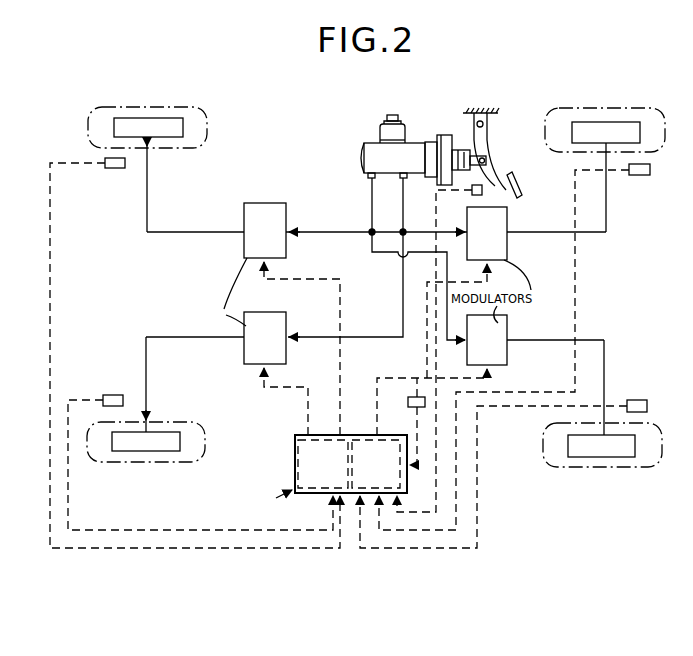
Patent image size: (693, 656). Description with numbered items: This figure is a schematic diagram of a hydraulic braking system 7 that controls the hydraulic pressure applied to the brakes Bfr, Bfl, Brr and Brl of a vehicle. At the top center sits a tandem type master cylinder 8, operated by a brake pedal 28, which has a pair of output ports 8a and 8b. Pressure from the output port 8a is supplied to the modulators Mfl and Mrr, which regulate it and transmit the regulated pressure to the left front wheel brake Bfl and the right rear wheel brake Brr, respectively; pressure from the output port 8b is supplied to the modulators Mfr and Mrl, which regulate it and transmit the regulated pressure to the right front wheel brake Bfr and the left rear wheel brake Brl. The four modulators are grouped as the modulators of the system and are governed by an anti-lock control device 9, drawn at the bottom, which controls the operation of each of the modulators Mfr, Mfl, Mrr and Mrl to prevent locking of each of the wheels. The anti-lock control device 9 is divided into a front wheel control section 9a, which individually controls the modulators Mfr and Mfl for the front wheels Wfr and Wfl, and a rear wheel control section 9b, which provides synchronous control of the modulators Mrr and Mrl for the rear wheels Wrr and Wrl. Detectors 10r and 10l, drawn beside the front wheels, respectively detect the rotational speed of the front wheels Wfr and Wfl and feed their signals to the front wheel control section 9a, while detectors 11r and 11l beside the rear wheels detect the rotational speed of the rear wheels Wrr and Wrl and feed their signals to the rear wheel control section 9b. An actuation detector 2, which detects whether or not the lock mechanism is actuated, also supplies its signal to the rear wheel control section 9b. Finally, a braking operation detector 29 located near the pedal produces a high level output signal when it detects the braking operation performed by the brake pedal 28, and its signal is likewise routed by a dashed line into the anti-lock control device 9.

The actuation detector 2 is at (408, 403).
The hydraulic braking system 7 is at (204, 269).
The tandem type master cylinder 8 is at (410, 160).
The output port 8a is at (406, 179).
The output port 8b is at (368, 176).
The anti-lock control device 9 is at (337, 394).
The front wheel control section 9a is at (297, 478).
The rear wheel control section 9b is at (357, 440).
The detector 10r is at (114, 169).
The detector 10l is at (112, 395).
The detector 11r is at (636, 176).
The detector 11l is at (634, 400).
The brake pedal 28 is at (520, 181).
The braking operation detector 29 is at (469, 194).
The modulator Mfr is at (265, 212).
The modulator Mfl is at (265, 322).
The modulator Mrr is at (500, 226).
The modulator Mrl is at (500, 336).
The right front wheel Wfr is at (118, 108).
The left front wheel Wfl is at (110, 463).
The right rear wheel Wrr is at (577, 110).
The left rear wheel Wrl is at (572, 468).
The right front wheel brake Bfr is at (167, 120).
The left front wheel brake Bfl is at (168, 452).
The right rear wheel brake Brr is at (623, 128).
The left rear wheel brake Brl is at (620, 458).